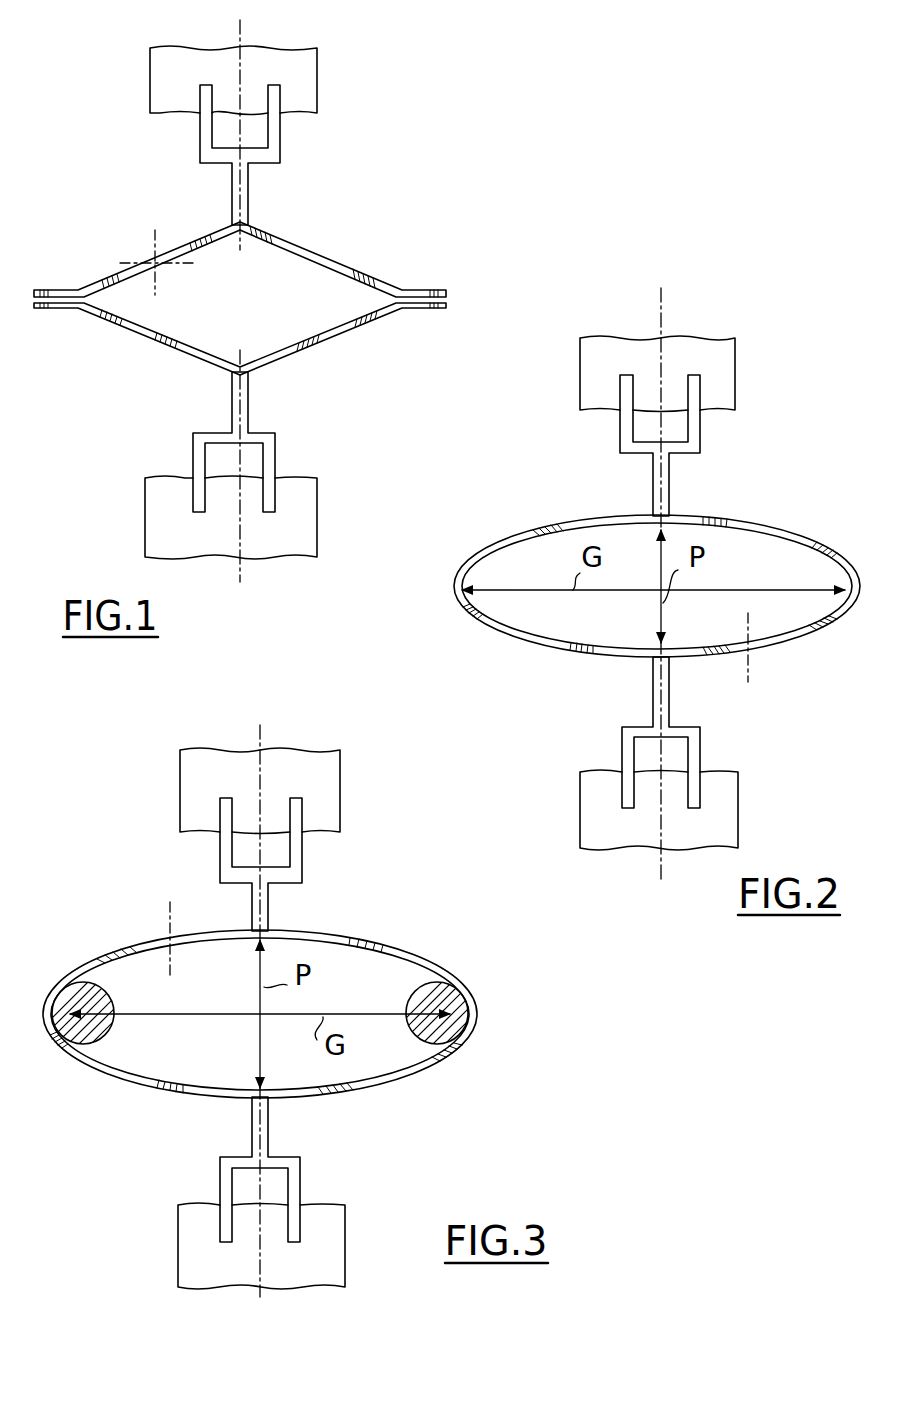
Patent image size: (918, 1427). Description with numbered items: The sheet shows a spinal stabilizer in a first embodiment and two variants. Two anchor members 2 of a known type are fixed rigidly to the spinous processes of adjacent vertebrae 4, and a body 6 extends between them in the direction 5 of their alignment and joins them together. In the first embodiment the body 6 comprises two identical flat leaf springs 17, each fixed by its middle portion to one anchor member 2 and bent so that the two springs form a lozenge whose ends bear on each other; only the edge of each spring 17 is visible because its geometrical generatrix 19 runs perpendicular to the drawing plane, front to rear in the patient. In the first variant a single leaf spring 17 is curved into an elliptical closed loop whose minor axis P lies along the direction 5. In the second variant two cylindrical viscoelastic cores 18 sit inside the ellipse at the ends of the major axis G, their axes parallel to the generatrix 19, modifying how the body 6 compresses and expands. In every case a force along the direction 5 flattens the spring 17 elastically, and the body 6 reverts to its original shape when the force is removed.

In FIG. 1, the anchor member 2 is at (275, 137).
In FIG. 2, the anchor member 2 is at (693, 432).
In FIG. 3, the anchor member 2 is at (297, 853).
In FIG. 1, the vertebra 4 is at (302, 83).
In FIG. 2, the vertebra 4 is at (717, 352).
In FIG. 3, the vertebra 4 is at (315, 783).
In FIG. 1, the direction of alignment 5 is at (240, 33).
In FIG. 2, the direction of alignment 5 is at (663, 303).
In FIG. 3, the direction of alignment 5 is at (261, 733).
In FIG. 1, the body 6 is at (138, 334).
In FIG. 2, the body 6 is at (793, 532).
In FIG. 3, the body 6 is at (418, 952).
In FIG. 1, the leaf spring 17 is at (317, 248).
In FIG. 2, the leaf spring 17 is at (542, 643).
In FIG. 3, the leaf spring 17 is at (140, 1083).
In FIG. 3, the core 18 is at (83, 1033).
In FIG. 1, the geometrical generatrix 19 is at (156, 262).
In FIG. 2, the geometrical generatrix 19 is at (747, 648).
In FIG. 3, the geometrical generatrix 19 is at (170, 938).